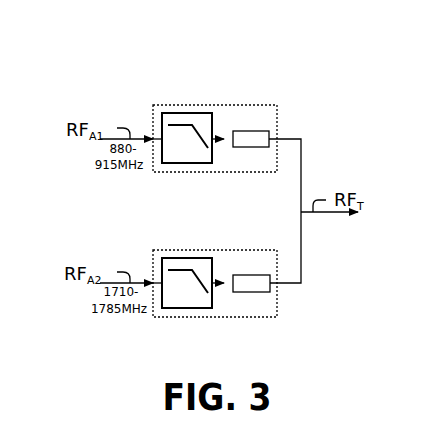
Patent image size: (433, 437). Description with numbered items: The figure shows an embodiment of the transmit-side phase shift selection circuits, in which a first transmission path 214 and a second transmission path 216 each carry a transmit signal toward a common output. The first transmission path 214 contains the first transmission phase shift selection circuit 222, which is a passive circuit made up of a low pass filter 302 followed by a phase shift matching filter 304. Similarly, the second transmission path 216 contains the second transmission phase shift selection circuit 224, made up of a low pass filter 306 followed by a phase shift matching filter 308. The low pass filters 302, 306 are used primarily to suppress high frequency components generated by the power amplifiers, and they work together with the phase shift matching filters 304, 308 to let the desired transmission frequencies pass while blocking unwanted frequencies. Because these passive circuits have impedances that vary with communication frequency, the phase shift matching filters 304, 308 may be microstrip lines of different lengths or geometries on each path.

The first transmission path 214 is at (109, 58).
The second transmission path 216 is at (69, 56).
The first transmission phase shift selection circuit 222 is at (213, 105).
The second transmission phase shift selection circuit 224 is at (213, 250).
The low pass filter 302 is at (187, 163).
The phase shift matching filter 304 is at (252, 139).
The low pass filter 306 is at (187, 308).
The phase shift matching filter 308 is at (250, 282).